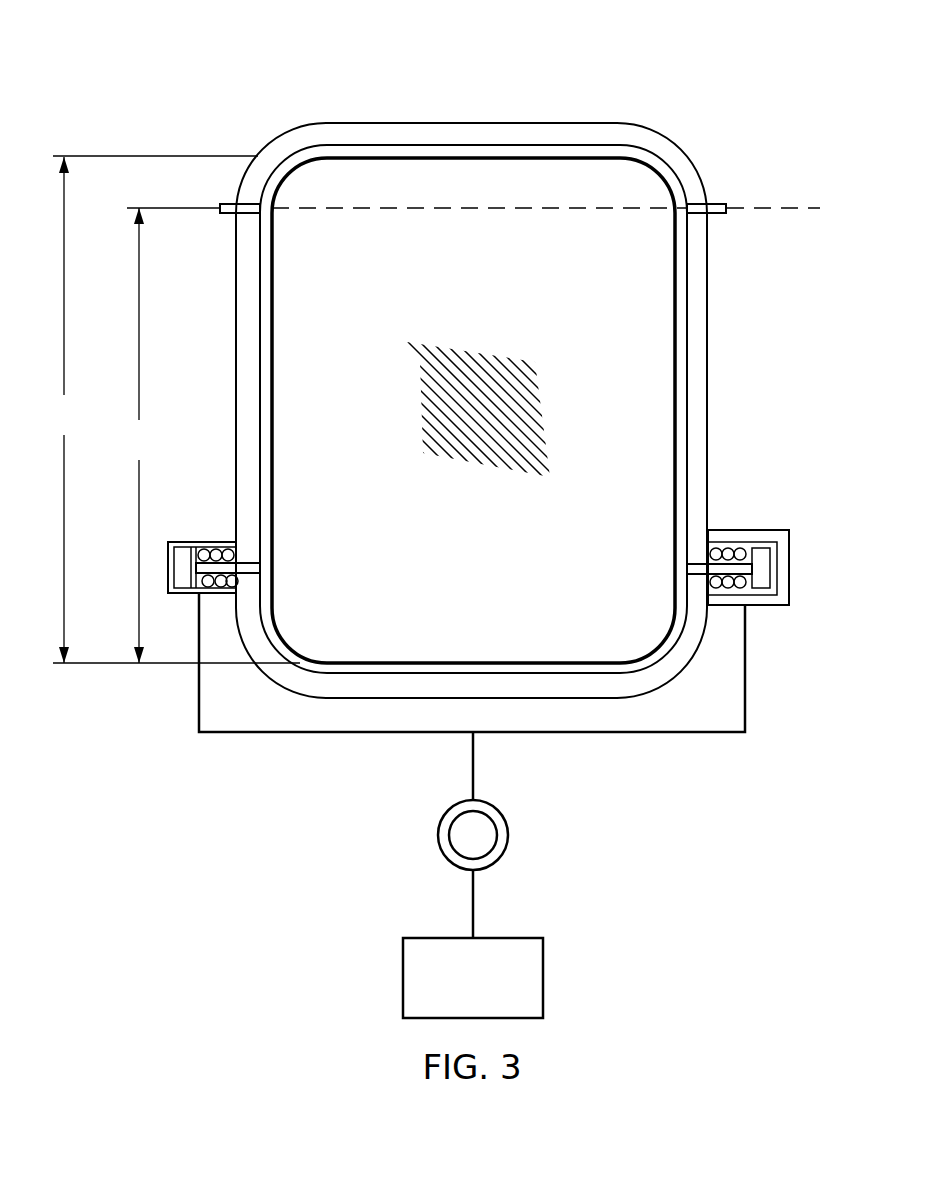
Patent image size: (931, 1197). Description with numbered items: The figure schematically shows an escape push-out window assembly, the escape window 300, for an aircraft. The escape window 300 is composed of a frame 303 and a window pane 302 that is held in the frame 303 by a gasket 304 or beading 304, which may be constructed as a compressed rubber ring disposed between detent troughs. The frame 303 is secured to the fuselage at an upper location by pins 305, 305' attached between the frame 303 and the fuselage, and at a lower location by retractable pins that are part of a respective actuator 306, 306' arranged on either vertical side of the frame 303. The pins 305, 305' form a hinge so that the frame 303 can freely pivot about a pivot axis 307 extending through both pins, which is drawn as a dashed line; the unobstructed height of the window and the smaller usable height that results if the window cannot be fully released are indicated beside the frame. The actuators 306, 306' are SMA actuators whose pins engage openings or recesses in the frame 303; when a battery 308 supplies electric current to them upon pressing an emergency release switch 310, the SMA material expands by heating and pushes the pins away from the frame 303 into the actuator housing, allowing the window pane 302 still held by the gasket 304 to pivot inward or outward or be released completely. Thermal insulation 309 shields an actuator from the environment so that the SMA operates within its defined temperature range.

The escape window 300 is at (260, 70).
The window pane 302 is at (563, 168).
The frame 303 is at (360, 128).
The gasket 304 is at (450, 146).
The pin 305 is at (221, 241).
The pin 305' is at (727, 242).
The actuator 306 is at (214, 539).
The actuator 306' is at (745, 535).
The pivot axis 307 is at (485, 211).
The battery 308 is at (403, 978).
The thermal insulation 309 is at (772, 607).
The emergency release switch 310 is at (509, 833).